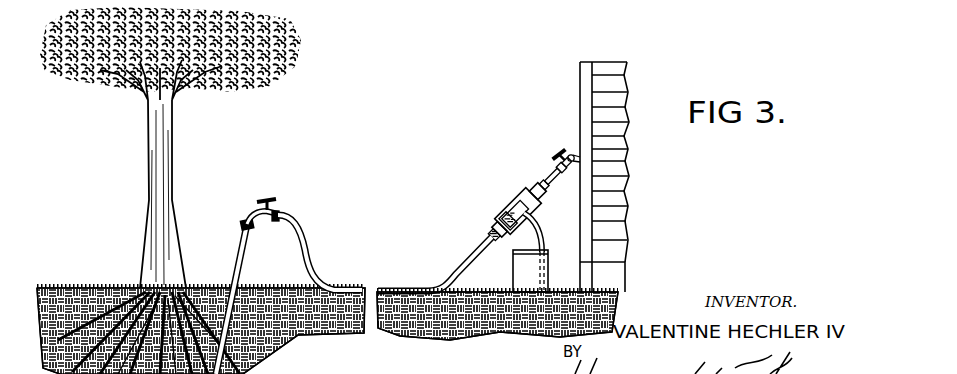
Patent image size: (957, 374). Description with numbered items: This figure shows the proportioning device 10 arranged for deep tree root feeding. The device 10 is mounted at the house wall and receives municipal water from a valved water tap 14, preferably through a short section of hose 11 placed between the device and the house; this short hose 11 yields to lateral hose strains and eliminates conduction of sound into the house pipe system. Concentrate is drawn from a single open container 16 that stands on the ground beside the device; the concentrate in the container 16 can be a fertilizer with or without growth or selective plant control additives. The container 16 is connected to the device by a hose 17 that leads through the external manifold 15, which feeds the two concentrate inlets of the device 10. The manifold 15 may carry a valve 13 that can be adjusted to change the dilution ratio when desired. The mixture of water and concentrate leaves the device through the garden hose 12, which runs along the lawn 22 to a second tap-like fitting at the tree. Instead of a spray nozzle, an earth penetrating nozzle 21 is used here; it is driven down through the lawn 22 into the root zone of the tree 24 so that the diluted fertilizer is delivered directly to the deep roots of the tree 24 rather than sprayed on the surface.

The proportioning device 10 is at (521, 182).
The short section of hose 11 is at (565, 165).
The garden hose 12 is at (313, 250).
The valve 13 is at (514, 200).
The valved water tap 14 is at (554, 147).
The external manifold 15 is at (494, 218).
The open container 16 is at (532, 280).
The hose 17 is at (545, 232).
The earth penetrating nozzle 21 is at (241, 245).
The lawn 22 is at (67, 286).
The tree 24 is at (244, 88).